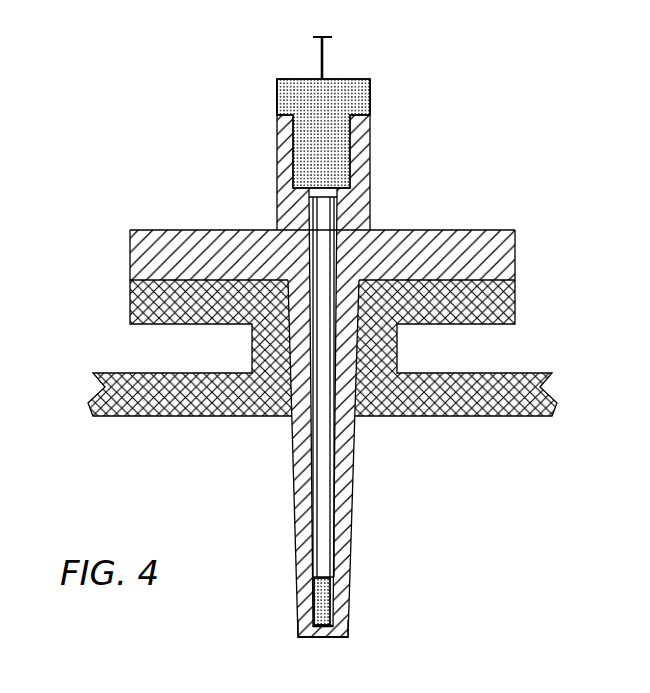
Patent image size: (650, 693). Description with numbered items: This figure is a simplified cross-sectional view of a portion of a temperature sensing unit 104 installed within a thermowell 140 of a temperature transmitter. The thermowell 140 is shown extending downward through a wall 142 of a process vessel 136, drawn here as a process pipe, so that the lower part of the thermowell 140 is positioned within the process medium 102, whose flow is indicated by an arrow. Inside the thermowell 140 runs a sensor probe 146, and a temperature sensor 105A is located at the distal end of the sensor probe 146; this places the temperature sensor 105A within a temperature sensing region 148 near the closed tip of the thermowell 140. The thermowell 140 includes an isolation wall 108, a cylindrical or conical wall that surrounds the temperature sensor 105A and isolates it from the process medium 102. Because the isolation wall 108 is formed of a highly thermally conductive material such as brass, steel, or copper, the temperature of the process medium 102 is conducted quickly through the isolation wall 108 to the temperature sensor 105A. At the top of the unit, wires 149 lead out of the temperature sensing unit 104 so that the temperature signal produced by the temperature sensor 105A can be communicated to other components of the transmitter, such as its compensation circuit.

The temperature sensing unit 104 is at (170, 92).
The wires 149 is at (327, 53).
The thermowell 140 is at (291, 480).
The sensor probe 146 is at (331, 524).
The temperature sensor 105A is at (313, 590).
The isolation wall 108 is at (347, 602).
The temperature sensing region 148 is at (268, 617).
The wall 142 is at (110, 373).
The process vessel 136 is at (528, 373).
The process medium 102 is at (417, 436).